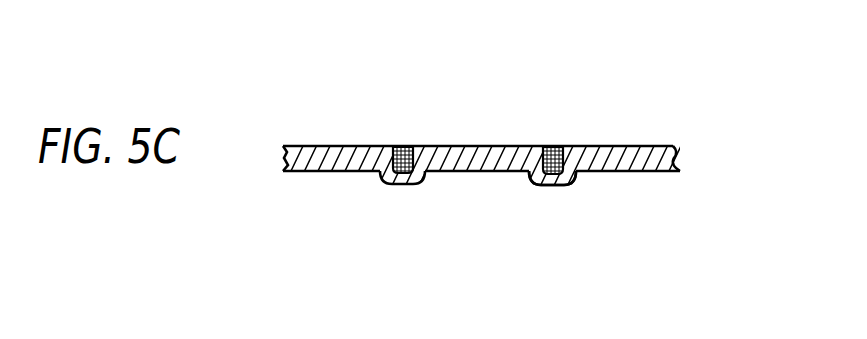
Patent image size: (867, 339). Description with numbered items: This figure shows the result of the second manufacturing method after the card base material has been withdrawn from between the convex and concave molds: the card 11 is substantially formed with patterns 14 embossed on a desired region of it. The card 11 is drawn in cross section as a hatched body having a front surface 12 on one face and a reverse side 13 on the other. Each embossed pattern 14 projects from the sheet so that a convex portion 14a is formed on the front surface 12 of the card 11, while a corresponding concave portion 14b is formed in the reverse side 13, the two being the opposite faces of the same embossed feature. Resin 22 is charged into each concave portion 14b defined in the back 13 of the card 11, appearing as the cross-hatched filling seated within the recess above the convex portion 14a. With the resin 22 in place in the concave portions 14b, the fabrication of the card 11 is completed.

The card 11 is at (684, 108).
The front surface 12 is at (318, 172).
The reverse side 13 is at (341, 146).
The pattern 14 is at (530, 194).
The convex portion 14a is at (575, 185).
The concave portion 14b is at (522, 146).
The resin 22 is at (554, 146).